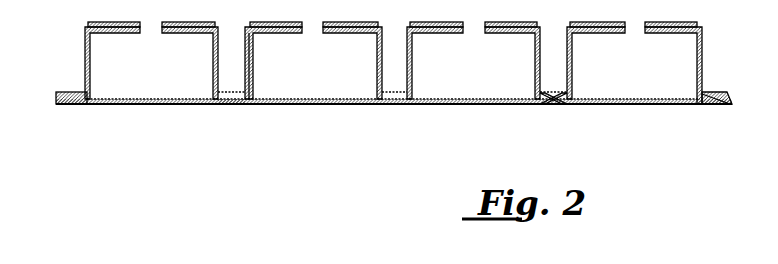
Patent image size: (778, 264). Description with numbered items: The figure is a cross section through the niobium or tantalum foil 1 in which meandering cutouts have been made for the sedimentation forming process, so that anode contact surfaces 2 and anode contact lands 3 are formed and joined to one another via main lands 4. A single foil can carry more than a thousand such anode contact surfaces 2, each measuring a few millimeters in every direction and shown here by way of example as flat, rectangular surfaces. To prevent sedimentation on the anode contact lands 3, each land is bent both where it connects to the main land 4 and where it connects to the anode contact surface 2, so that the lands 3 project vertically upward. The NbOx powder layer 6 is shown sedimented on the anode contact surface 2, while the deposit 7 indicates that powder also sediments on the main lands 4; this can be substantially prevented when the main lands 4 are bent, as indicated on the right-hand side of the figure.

The niobium or tantalum foil 1 is at (176, 125).
The anode contact surface 2 is at (125, 33).
The anode contact land 3 is at (85, 72).
The main land 4 is at (237, 104).
The NbOx powder layer 6 is at (353, 28).
The powder sedimented on main lands 7 is at (250, 104).